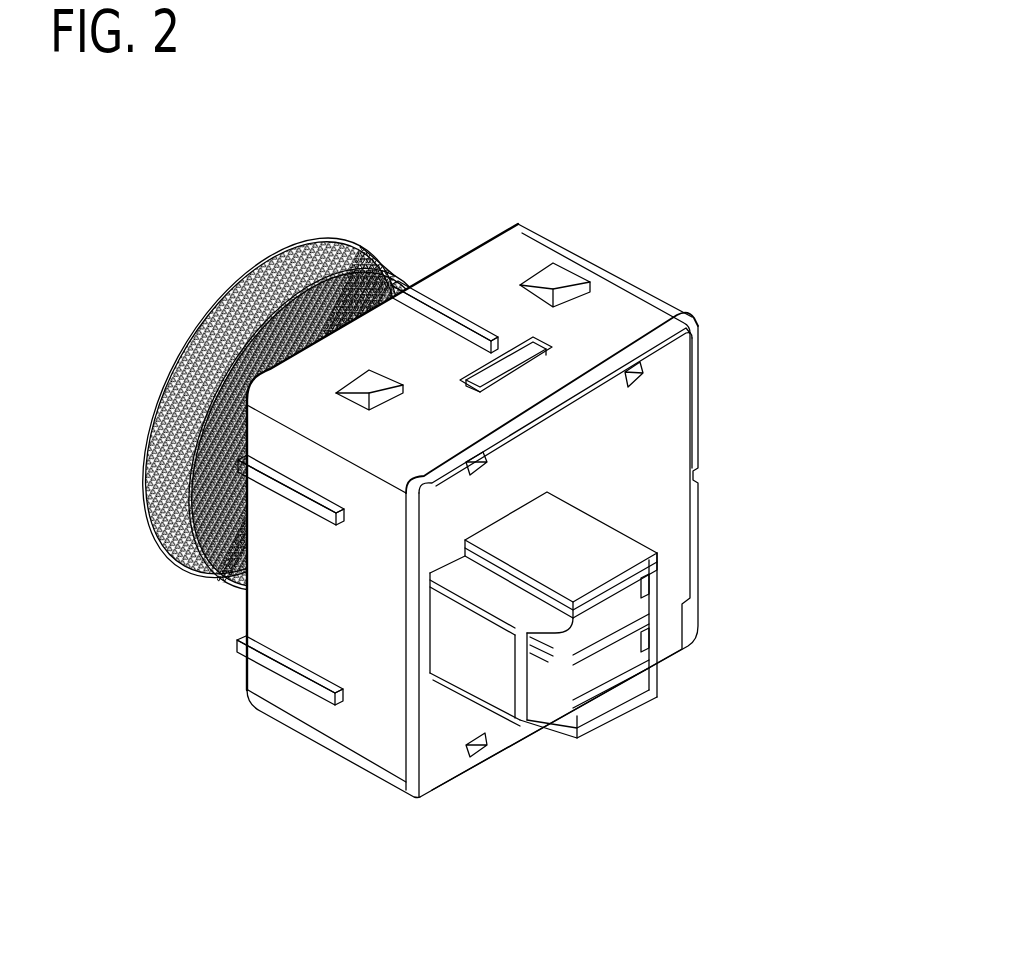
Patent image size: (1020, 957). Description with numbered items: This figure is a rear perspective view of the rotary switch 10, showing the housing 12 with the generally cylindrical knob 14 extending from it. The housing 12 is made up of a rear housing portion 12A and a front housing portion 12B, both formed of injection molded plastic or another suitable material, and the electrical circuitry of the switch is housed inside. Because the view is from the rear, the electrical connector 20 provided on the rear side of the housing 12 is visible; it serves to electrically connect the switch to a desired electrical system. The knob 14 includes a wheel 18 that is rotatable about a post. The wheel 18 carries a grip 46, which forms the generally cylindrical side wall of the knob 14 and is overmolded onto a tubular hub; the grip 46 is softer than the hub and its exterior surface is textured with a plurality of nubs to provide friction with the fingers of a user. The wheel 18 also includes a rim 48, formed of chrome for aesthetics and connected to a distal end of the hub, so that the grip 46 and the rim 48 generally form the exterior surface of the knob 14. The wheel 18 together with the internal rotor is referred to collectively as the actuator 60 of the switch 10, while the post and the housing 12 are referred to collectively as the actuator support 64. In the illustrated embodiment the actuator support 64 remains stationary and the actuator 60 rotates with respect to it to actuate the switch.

The switch 10 is at (416, 475).
The housing 12 is at (492, 521).
The rear housing portion 12A is at (656, 424).
The front housing portion 12B is at (516, 255).
The knob 14 is at (286, 377).
The wheel 18 is at (265, 252).
The electrical connector 20 is at (658, 632).
The grip 46 is at (180, 503).
The rim 48 is at (222, 294).
The actuator 60 is at (260, 377).
The actuator support 64 is at (227, 782).